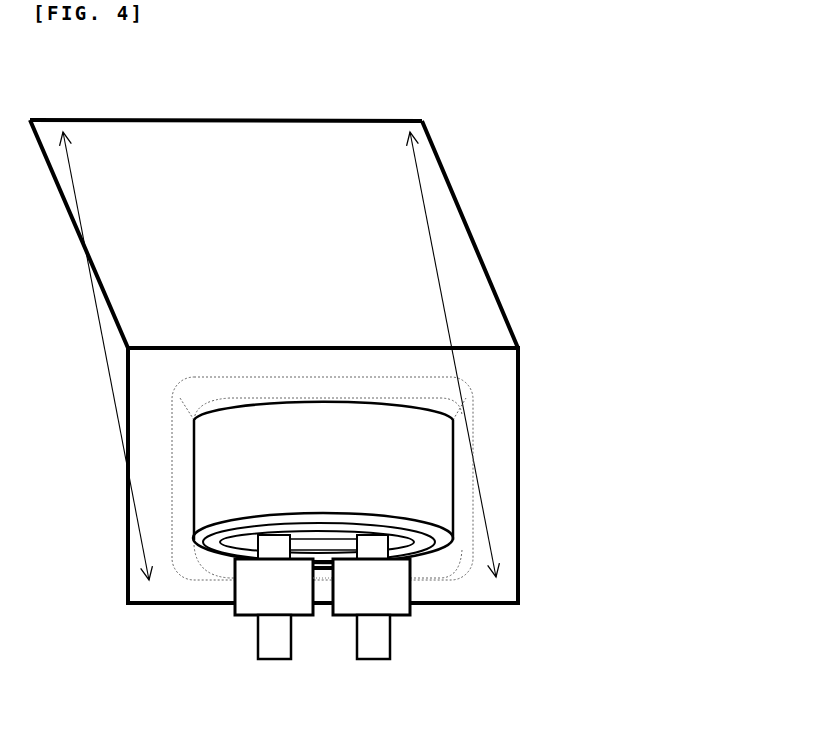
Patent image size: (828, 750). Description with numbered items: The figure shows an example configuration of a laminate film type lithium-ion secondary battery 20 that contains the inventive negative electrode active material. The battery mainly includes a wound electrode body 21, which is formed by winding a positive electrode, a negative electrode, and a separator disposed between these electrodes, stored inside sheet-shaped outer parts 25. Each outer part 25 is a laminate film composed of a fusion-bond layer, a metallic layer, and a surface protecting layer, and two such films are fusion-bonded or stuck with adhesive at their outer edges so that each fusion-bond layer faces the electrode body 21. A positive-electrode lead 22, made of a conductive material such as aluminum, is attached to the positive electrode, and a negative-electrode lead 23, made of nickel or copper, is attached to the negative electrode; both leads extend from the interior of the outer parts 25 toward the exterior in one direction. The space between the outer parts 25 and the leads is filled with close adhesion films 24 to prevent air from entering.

The laminate film type lithium-ion secondary battery 20 is at (301, 343).
The wound electrode body 21 is at (410, 462).
The positive-electrode lead 22 is at (270, 644).
The negative-electrode lead 23 is at (370, 644).
The close adhesion film 24 is at (395, 592).
The outer part 25 is at (345, 237).